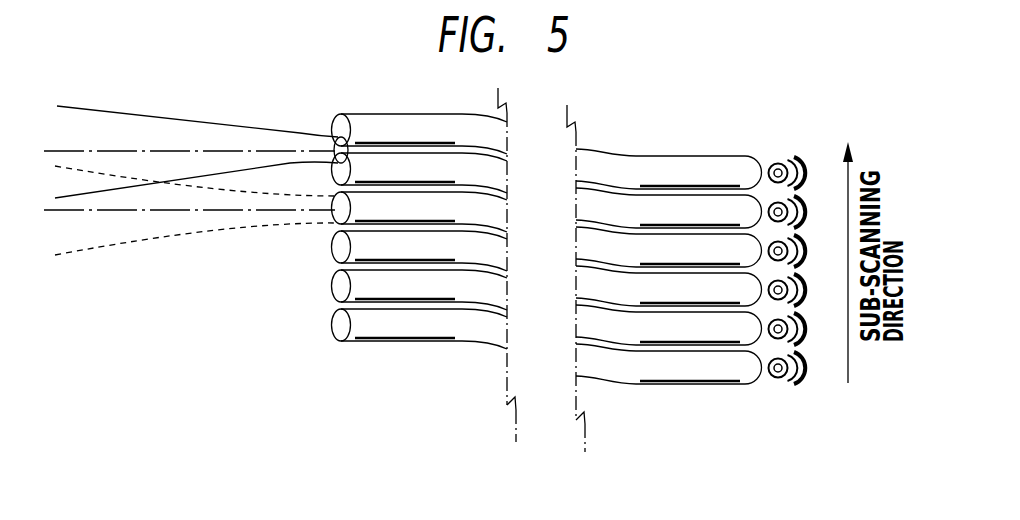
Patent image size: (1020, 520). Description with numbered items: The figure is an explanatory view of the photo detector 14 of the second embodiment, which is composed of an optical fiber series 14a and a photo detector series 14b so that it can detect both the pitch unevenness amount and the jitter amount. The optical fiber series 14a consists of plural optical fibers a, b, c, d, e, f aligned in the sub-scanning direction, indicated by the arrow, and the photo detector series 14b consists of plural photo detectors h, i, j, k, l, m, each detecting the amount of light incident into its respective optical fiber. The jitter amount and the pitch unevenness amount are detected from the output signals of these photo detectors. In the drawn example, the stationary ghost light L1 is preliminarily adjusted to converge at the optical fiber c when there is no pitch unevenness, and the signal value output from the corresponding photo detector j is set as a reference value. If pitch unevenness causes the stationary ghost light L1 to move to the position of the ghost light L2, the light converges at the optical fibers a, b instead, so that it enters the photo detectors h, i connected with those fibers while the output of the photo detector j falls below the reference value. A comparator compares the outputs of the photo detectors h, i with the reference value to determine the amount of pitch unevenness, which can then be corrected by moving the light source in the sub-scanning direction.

The photo detector 14 is at (582, 298).
The optical fiber series 14a is at (424, 265).
The photo detector series 14b is at (699, 278).
The optical fiber a is at (420, 134).
The optical fiber b is at (420, 173).
The optical fiber c is at (420, 212).
The optical fiber d is at (420, 251).
The optical fiber e is at (420, 290).
The optical fiber f is at (420, 329).
The photo detector h is at (701, 169).
The photo detector i is at (697, 208).
The photo detector j is at (697, 247).
The photo detector k is at (701, 286).
The photo detector l is at (697, 325).
The photo detector m is at (704, 364).
The stationary ghost light L1 is at (196, 205).
The ghost light L2 is at (197, 125).